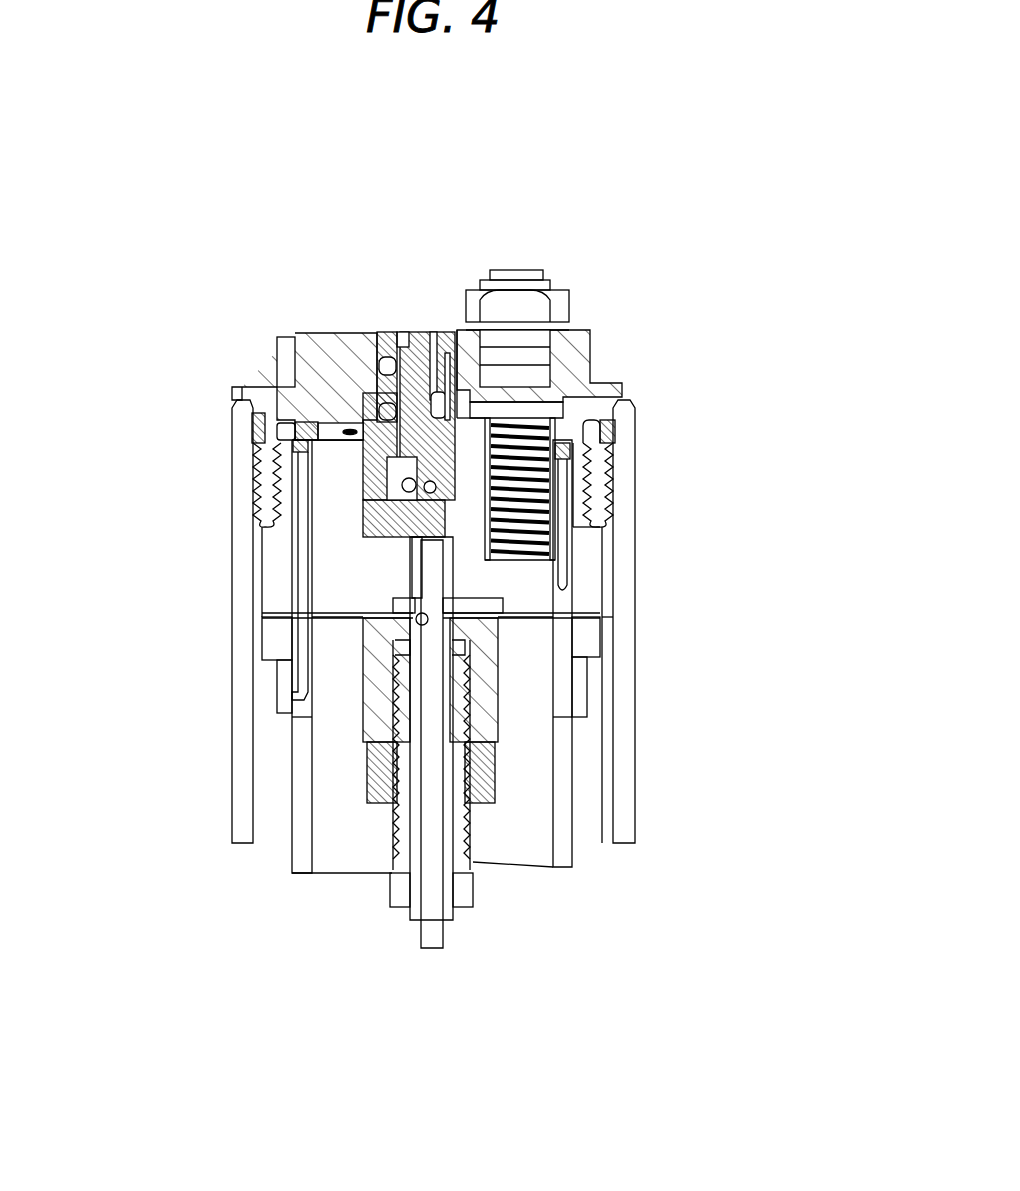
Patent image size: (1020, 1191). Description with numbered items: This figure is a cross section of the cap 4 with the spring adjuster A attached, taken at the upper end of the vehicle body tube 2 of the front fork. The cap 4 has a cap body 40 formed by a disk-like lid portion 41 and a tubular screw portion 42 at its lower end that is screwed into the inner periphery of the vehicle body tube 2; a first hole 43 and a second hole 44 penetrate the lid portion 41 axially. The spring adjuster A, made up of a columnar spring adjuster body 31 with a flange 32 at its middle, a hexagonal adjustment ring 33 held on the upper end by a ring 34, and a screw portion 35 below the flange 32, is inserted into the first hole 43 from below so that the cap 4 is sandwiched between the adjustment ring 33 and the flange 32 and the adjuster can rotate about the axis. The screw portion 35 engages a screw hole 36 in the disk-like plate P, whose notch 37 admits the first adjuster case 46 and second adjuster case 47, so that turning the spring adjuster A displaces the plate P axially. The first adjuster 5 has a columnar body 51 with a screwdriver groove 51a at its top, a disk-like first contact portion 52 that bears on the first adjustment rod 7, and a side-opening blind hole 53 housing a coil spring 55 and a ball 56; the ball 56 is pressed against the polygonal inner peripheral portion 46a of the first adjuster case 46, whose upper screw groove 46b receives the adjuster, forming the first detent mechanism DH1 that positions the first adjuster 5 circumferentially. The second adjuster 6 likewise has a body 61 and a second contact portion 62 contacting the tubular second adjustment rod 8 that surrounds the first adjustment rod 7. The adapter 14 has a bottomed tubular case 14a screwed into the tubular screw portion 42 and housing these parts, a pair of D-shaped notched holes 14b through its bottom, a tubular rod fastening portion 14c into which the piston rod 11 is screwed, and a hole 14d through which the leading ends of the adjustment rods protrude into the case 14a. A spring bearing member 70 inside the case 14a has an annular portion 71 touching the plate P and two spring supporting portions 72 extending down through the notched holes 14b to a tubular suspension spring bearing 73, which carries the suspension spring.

The vehicle body tube 2 is at (627, 778).
The cap 4 is at (593, 336).
The first adjuster 5 is at (370, 350).
The second adjuster 6 is at (510, 755).
The first adjustment rod 7 is at (427, 932).
The second adjustment rod 8 is at (408, 922).
The piston rod 11 is at (470, 915).
The adapter 14 is at (616, 562).
The case 14a is at (272, 592).
The notched holes 14b is at (273, 637).
The rod fastening portion 14c is at (390, 653).
The hole 14d is at (355, 612).
The spring adjuster body 31 is at (565, 335).
The flange 32 is at (623, 394).
The adjustment ring 33 is at (560, 297).
The ring 34 is at (512, 268).
The screw portion 35 is at (635, 545).
The screw hole 36 is at (497, 489).
The notch 37 is at (451, 328).
The cap body 40 is at (300, 320).
The lid portion 41 is at (445, 335).
The tubular screw portion 42 is at (633, 497).
The first hole 43 is at (545, 385).
The second hole 44 is at (345, 392).
The first adjuster case 46 is at (262, 438).
The polygonal inner peripheral portion 46a is at (320, 538).
The screw groove 46b is at (333, 417).
The second adjuster case 47 is at (363, 692).
The body 51 is at (383, 333).
The groove 51a is at (408, 332).
The first contact portion 52 is at (363, 537).
The blind hole 53 is at (262, 464).
The coil spring 55 is at (410, 540).
The ball 56 is at (402, 485).
The body 61 is at (582, 640).
The second contact portion 62 is at (489, 640).
The spring bearing member 70 is at (636, 458).
The annular portion 71 is at (637, 487).
The spring supporting portions 72 is at (295, 688).
The suspension spring bearing 73 is at (570, 842).
The spring adjuster A is at (582, 292).
The plate P is at (637, 423).
The first detent mechanism DH1 is at (635, 606).